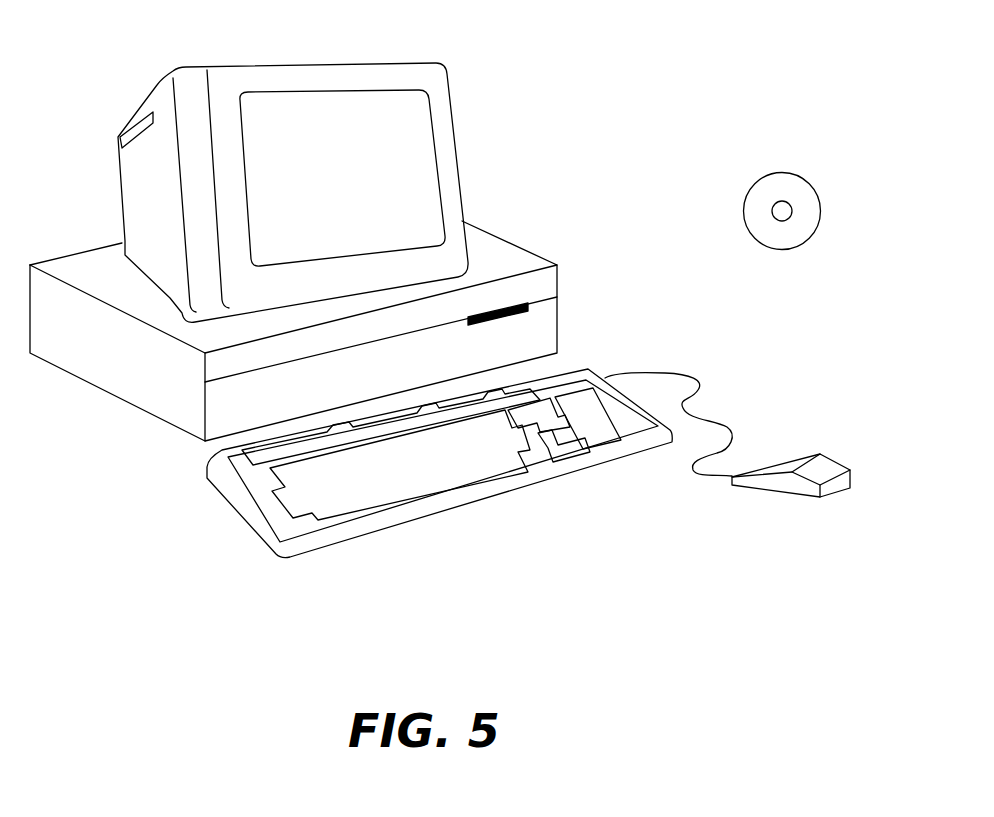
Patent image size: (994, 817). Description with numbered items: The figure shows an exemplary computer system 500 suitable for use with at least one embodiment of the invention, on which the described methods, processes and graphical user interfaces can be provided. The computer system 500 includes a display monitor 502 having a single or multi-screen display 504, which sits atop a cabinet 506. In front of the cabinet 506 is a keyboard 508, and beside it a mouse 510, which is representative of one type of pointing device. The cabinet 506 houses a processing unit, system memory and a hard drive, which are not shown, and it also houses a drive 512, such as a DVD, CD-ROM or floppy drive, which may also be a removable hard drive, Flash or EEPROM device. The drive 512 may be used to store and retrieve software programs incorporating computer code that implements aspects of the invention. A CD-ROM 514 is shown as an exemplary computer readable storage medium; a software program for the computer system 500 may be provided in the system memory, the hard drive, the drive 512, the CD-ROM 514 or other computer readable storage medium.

The computer system 500 is at (688, 60).
The display monitor 502 is at (462, 190).
The display 504 is at (415, 135).
The cabinet 506 is at (160, 420).
The keyboard 508 is at (447, 510).
The mouse 510 is at (837, 460).
The drive 512 is at (528, 300).
The CD-ROM 514 is at (800, 175).